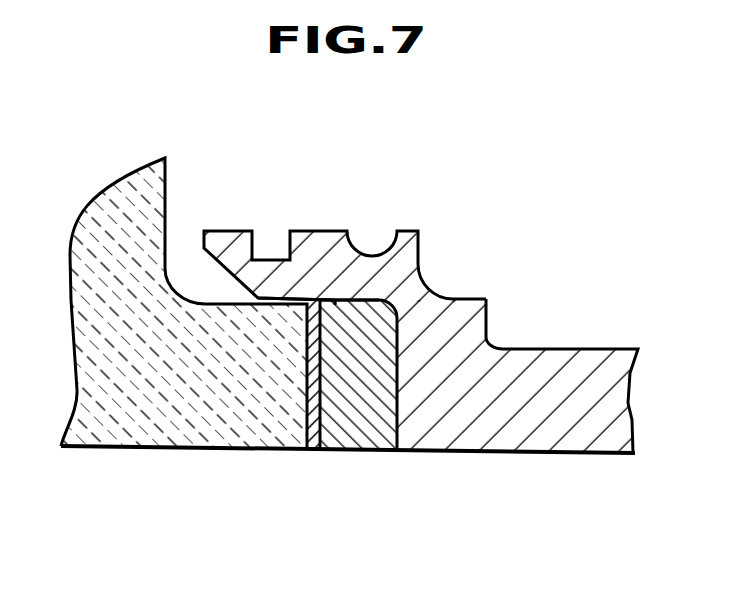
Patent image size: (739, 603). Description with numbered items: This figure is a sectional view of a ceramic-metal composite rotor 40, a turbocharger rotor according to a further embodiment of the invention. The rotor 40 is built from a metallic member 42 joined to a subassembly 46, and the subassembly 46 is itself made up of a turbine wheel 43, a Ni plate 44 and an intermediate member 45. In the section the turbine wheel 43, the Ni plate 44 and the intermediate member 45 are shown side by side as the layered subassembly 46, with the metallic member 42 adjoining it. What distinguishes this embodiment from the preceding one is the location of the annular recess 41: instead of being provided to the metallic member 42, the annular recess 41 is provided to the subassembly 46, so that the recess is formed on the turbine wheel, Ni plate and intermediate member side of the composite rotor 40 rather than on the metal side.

The ceramic-metal composite rotor 40 is at (373, 192).
The annular recess 41 is at (270, 300).
The metallic member 42 is at (500, 455).
The turbine wheel 43 is at (260, 453).
The Ni plate 44 is at (312, 453).
The intermediate member 45 is at (359, 408).
The subassembly 46 is at (233, 366).